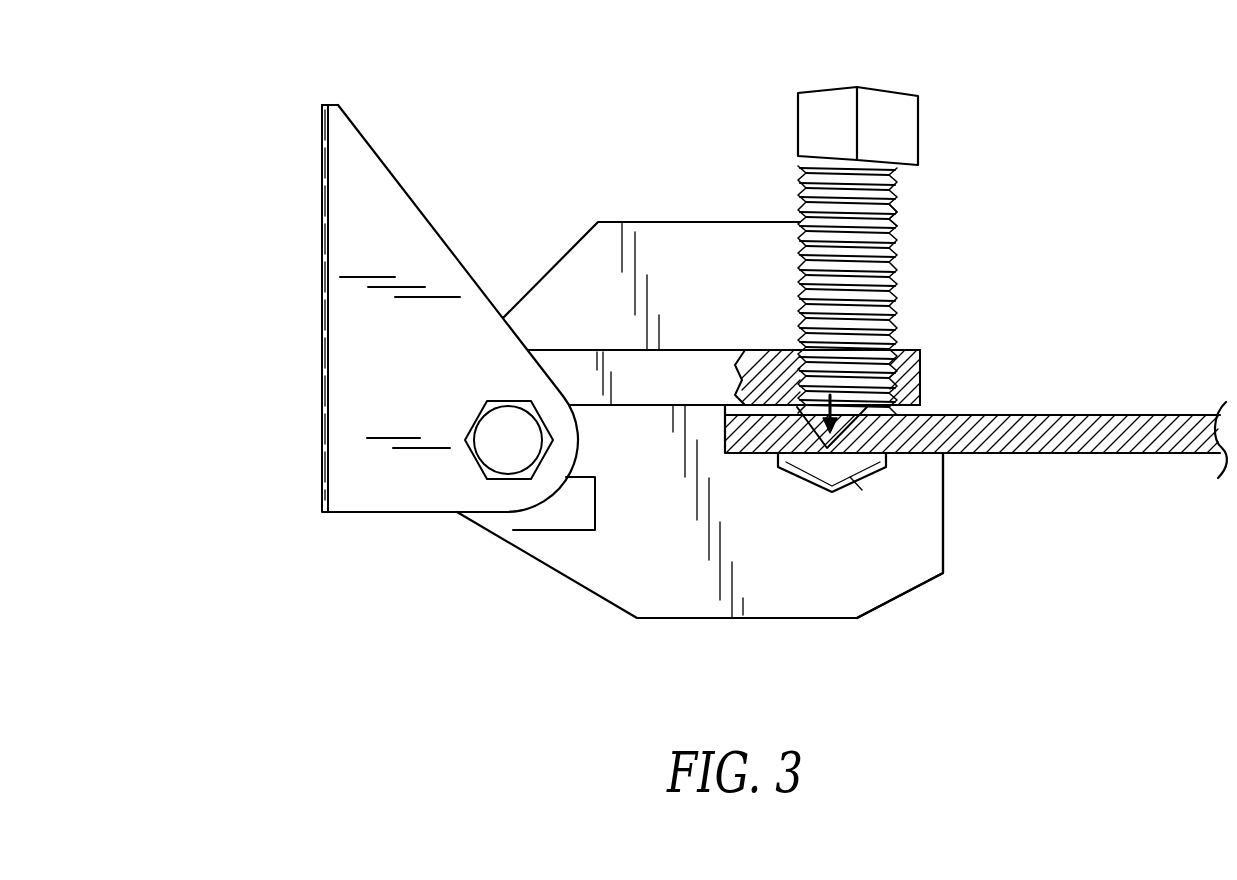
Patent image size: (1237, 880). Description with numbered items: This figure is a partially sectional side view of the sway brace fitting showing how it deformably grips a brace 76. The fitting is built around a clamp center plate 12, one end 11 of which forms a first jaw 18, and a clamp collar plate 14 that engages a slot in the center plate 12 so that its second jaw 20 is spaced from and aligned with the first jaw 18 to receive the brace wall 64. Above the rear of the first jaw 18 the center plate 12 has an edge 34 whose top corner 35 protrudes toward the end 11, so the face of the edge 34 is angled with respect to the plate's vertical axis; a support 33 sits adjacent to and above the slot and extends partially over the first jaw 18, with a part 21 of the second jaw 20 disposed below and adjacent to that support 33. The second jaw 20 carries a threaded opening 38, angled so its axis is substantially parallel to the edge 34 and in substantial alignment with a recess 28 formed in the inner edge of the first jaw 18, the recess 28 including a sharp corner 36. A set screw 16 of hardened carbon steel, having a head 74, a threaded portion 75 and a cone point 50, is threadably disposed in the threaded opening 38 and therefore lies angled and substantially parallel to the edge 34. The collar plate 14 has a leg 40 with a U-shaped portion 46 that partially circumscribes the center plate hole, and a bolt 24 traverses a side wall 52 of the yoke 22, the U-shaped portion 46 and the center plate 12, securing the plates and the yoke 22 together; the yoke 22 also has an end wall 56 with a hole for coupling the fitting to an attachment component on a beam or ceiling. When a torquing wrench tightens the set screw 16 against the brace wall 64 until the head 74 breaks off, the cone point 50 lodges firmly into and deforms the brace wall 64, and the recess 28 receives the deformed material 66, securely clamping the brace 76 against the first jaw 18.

The end of clamp center plate 11 is at (923, 533).
The clamp center plate 12 is at (628, 614).
The clamp collar plate 14 is at (552, 349).
The set screw 16 is at (893, 287).
The first jaw 18 is at (815, 585).
The second jaw 20 is at (920, 348).
The part of second jaw 21 is at (762, 347).
The yoke 22 is at (268, 300).
The bolt 24 is at (482, 438).
The recess 28 is at (850, 477).
The support 33 is at (778, 280).
The edge 34 is at (800, 252).
The top corner of edge 35 is at (805, 215).
The sharp corner 36 is at (900, 460).
The threaded opening 38 is at (920, 383).
The collar plate leg 40 is at (617, 390).
The U-shaped portion 46 is at (513, 522).
The cone point 50 is at (783, 460).
The yoke side wall 52 is at (343, 390).
The yoke end wall 56 is at (322, 182).
The brace wall 64 is at (1068, 453).
The deformed material 66 is at (823, 473).
The head 74 is at (880, 90).
The threaded portion 75 is at (893, 210).
The brace 76 is at (1123, 427).